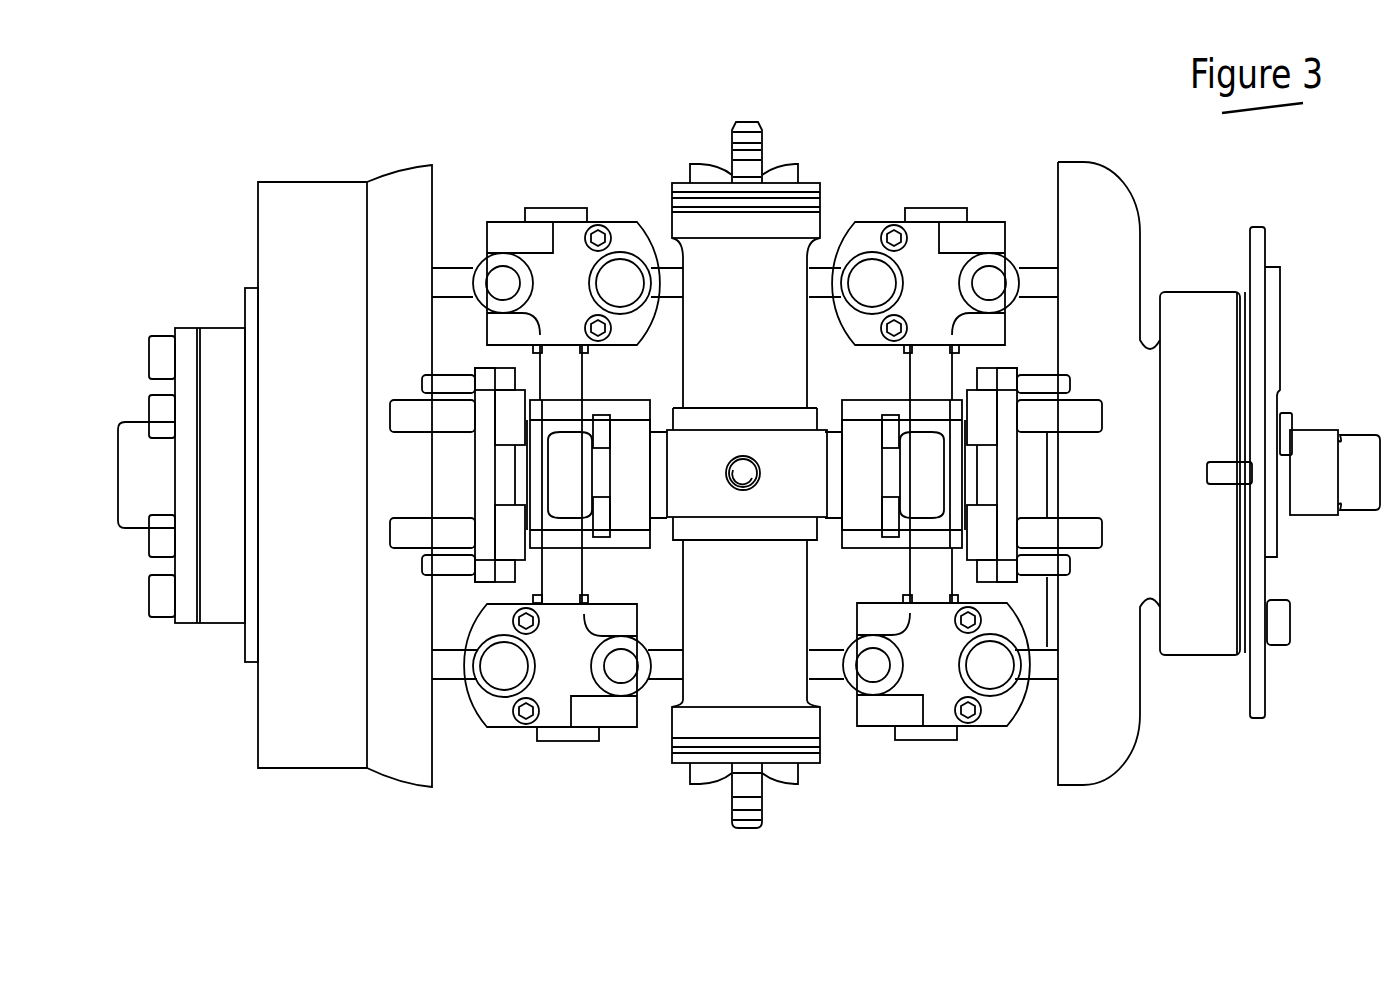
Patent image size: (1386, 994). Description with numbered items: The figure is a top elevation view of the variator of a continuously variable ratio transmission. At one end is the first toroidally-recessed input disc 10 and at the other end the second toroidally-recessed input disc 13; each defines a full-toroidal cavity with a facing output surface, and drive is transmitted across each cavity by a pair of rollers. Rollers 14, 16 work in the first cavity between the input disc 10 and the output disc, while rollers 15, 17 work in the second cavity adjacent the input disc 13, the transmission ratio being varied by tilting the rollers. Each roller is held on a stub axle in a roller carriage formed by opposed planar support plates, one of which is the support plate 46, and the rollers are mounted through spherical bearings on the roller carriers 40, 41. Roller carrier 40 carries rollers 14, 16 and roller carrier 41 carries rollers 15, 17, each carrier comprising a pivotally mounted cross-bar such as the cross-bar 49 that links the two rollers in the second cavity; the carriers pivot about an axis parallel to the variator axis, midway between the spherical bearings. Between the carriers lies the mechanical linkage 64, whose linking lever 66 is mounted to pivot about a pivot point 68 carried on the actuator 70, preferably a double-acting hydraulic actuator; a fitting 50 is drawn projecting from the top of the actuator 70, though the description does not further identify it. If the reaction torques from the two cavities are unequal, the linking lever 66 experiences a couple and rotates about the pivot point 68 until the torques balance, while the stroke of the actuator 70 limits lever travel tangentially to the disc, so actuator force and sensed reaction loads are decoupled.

The first toroidally-recessed input disc 10 is at (432, 193).
The second toroidally-recessed input disc 13 is at (1055, 182).
The roller 14 is at (448, 668).
The roller 15 is at (1048, 677).
The roller 16 is at (455, 277).
The roller 17 is at (1028, 268).
The roller carrier 40 is at (567, 277).
The roller carrier 41 is at (932, 287).
The planar support plate 46 is at (560, 372).
The cross-bar 49 is at (931, 372).
The fitting nipple 50 is at (748, 134).
The mechanical linkage 64 is at (893, 497).
The linking lever 66 is at (863, 490).
The pivot point 68 is at (748, 478).
The actuator 70 is at (747, 496).